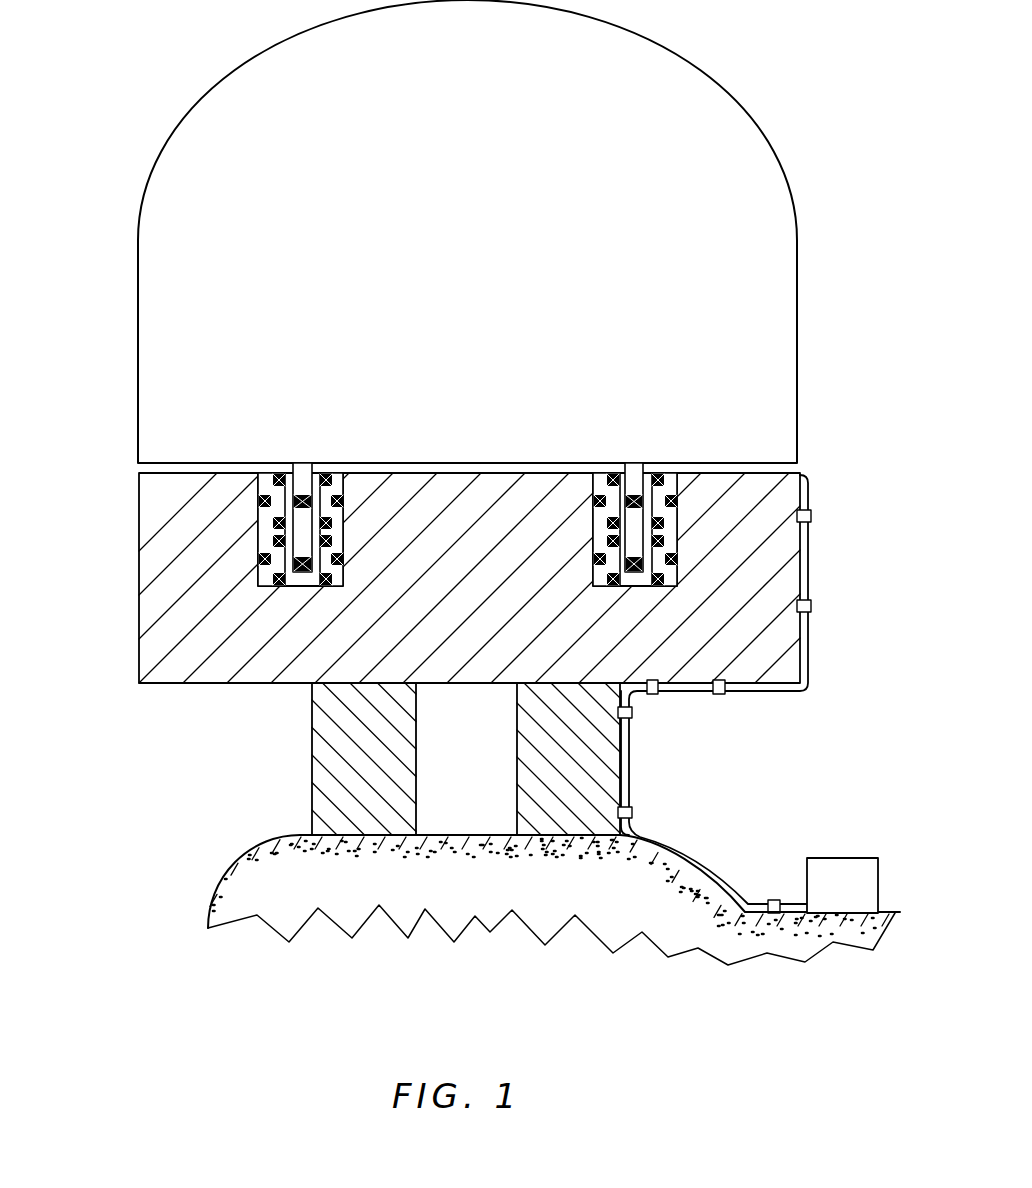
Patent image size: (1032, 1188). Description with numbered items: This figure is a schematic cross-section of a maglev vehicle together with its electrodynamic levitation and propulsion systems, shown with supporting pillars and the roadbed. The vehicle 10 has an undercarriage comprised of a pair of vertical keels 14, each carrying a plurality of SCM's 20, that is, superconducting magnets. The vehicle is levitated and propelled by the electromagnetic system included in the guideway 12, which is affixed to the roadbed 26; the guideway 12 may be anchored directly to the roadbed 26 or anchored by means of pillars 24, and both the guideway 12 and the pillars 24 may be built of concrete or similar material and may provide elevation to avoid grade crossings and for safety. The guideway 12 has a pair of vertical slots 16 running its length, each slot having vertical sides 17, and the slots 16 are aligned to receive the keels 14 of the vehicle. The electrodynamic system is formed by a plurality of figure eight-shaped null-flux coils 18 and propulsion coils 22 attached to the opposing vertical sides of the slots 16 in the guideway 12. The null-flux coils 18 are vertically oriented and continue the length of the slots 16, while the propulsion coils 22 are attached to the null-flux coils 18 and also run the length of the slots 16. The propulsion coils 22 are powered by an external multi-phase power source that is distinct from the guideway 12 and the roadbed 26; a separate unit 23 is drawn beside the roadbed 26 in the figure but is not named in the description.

The vehicle 10 is at (481, 252).
The guideway 12 is at (152, 567).
The vertical keels 14 is at (302, 470).
The vertical slots 16 is at (642, 588).
The vertical sides 17 is at (258, 535).
The null-flux coils 18 is at (278, 588).
The SCM's 20 is at (637, 548).
The propulsion coils 22 is at (677, 520).
The vacuum pump 23 is at (822, 858).
The pillars 24 is at (613, 738).
The roadbed 26 is at (253, 855).